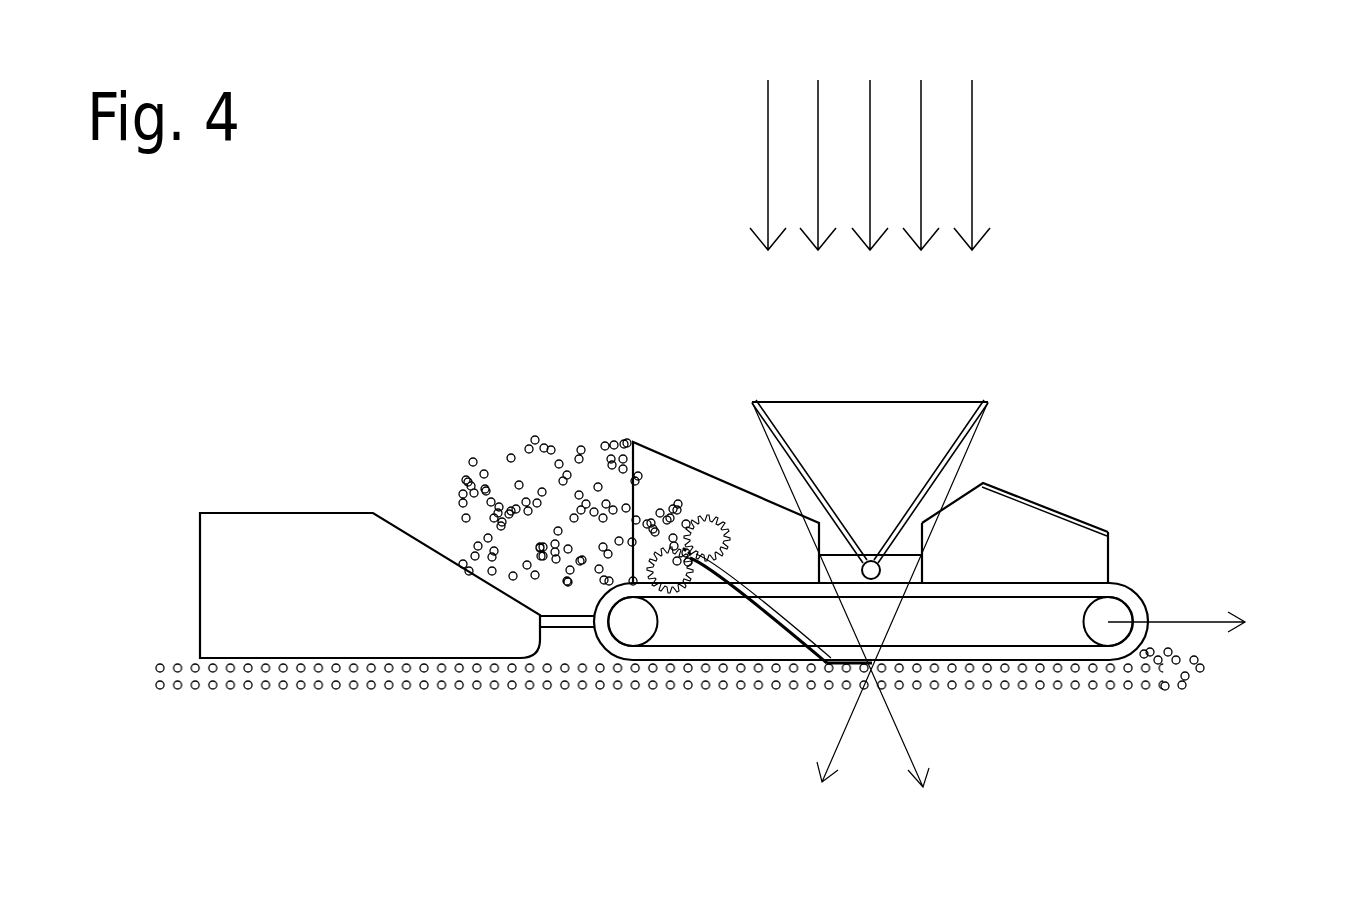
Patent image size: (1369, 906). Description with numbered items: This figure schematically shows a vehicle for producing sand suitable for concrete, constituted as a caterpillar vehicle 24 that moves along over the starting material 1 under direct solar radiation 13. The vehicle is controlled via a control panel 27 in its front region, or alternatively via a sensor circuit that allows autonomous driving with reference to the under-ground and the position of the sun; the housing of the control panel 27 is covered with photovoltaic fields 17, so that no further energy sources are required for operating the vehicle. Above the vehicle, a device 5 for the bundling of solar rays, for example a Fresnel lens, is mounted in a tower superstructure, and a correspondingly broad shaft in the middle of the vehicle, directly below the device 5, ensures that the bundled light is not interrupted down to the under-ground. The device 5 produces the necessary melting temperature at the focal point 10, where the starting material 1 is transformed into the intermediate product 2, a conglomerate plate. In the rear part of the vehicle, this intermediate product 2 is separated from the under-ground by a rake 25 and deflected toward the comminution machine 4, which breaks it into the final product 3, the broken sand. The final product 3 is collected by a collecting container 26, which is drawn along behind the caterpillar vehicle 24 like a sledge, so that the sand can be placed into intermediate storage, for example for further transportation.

The starting material 1 is at (1172, 690).
The intermediate product 2 is at (762, 621).
The final product 3 is at (489, 440).
The comminution machine 4 is at (653, 469).
The device for the bundling of solar rays 5 is at (867, 397).
The focal point 10 is at (874, 672).
The direct solar radiation 13 is at (975, 158).
The photovoltaic fields 17 is at (1046, 502).
The caterpillar vehicle 24 is at (1120, 606).
The rake 25 is at (711, 603).
The collecting container 26 is at (228, 528).
The control panel 27 is at (1077, 554).